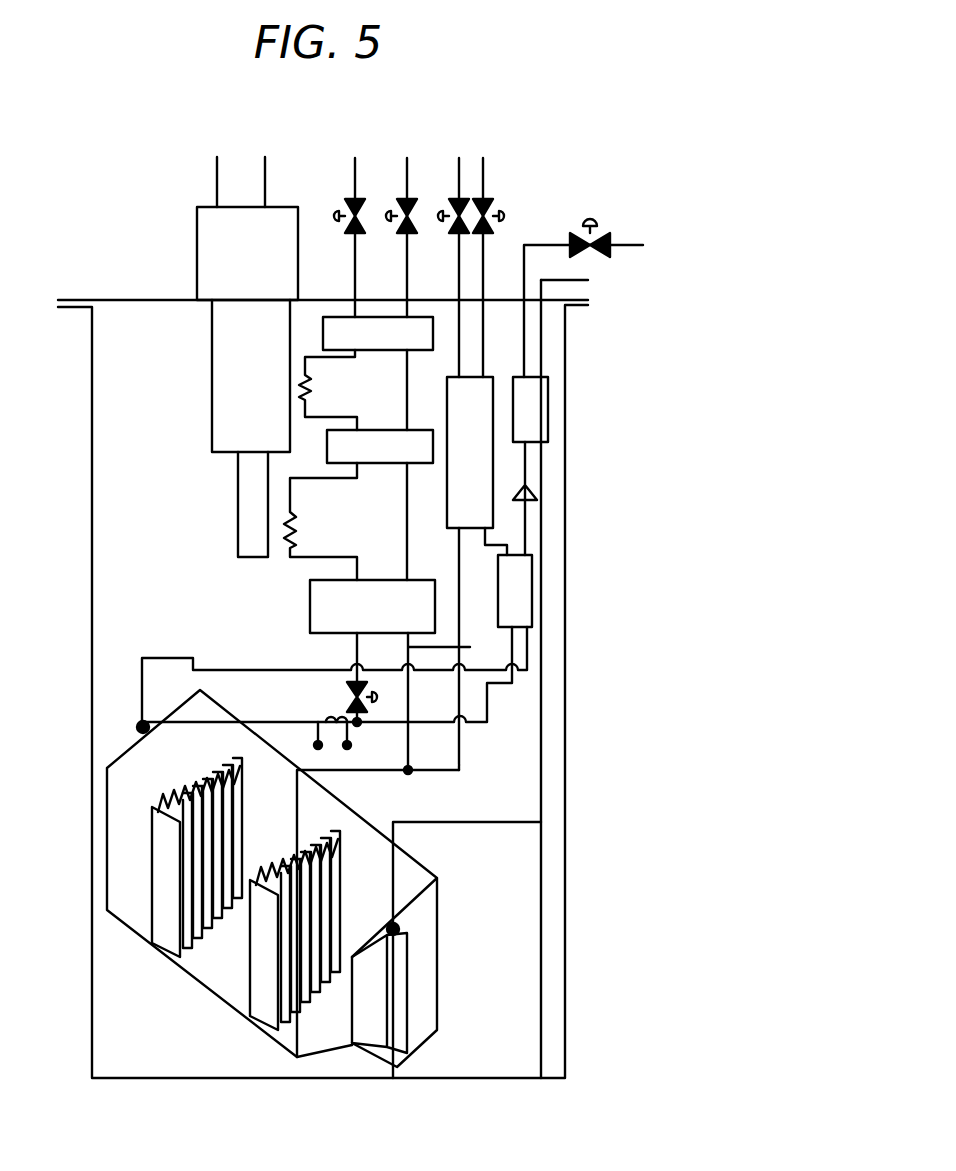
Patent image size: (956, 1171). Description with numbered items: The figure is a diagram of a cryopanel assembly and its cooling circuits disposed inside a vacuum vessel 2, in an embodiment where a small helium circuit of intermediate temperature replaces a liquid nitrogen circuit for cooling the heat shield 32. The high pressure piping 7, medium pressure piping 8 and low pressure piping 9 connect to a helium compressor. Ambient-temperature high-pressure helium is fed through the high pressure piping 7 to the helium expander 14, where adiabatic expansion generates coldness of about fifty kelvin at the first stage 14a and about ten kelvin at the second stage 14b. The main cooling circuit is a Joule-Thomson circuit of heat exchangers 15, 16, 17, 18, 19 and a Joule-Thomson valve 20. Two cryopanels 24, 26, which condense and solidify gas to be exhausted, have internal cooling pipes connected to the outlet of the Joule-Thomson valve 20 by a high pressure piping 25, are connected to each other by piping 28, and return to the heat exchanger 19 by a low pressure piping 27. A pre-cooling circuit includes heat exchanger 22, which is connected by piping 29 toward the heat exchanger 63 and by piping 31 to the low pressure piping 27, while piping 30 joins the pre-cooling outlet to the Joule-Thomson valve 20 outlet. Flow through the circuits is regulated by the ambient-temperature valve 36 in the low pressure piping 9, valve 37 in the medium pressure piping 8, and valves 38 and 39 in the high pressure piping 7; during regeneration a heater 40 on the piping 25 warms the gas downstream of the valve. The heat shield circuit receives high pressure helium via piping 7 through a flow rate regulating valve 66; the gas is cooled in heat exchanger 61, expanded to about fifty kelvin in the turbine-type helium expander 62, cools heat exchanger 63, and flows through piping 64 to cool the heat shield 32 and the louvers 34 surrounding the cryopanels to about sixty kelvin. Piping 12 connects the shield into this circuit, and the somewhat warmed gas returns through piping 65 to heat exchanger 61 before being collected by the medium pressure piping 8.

The vacuum vessel 2 is at (565, 893).
The high pressure piping 7 is at (217, 166).
The medium pressure piping 8 is at (459, 158).
The low pressure piping 9 is at (265, 166).
The piping 12 is at (488, 823).
The helium expander 14 is at (210, 230).
The first stage 14a is at (228, 440).
The second stage 14b is at (248, 545).
The heat exchanger 15 is at (420, 327).
The heat exchanger 16 is at (310, 380).
The heat exchanger 17 is at (380, 462).
The heat exchanger 18 is at (300, 530).
The heat exchanger 19 is at (372, 585).
The Joule-Thomson valve 20 is at (398, 727).
The heat exchanger 22 is at (475, 450).
The cryopanel 24 is at (145, 765).
The high pressure piping 25 is at (255, 723).
The cryopanel 26 is at (320, 848).
The low pressure piping 27 is at (578, 705).
The piping 28 is at (220, 1010).
The piping 29 is at (498, 540).
The piping 30 is at (490, 722).
The piping 31 is at (505, 620).
The heat shield 32 is at (430, 948).
The louvers 34 is at (160, 830).
The valve 36 is at (397, 216).
The valve 37 is at (445, 213).
The valve 38 is at (497, 215).
The valve 39 is at (338, 216).
The heater 40 is at (350, 682).
The heat exchanger 61 is at (538, 405).
The helium expander 62 is at (530, 497).
The heat exchanger 63 is at (517, 580).
The piping 64 is at (527, 652).
The piping 65 is at (453, 822).
The flow rate regulating valve 66 is at (598, 230).